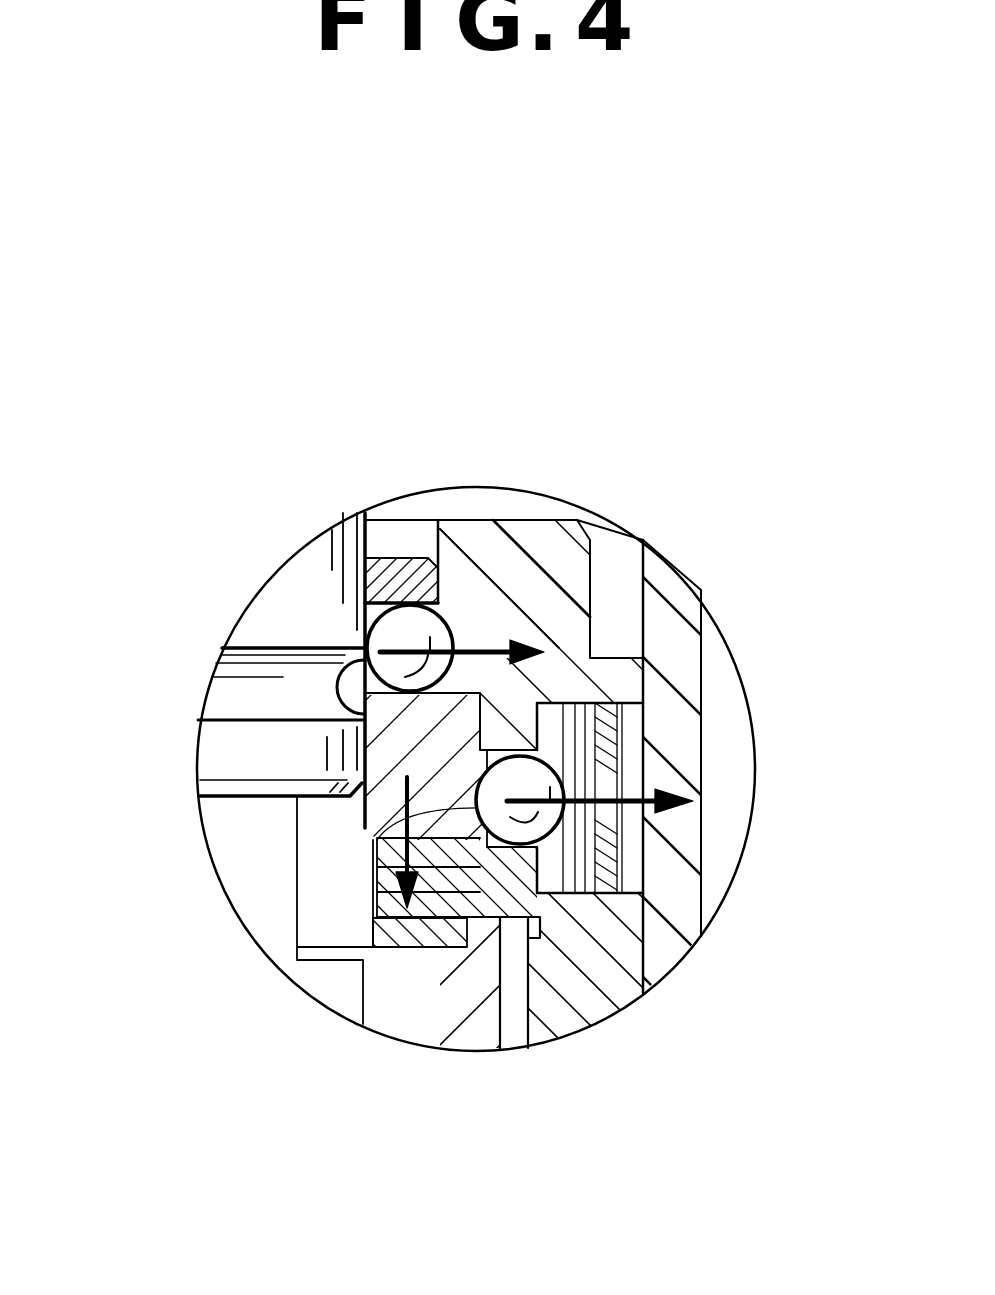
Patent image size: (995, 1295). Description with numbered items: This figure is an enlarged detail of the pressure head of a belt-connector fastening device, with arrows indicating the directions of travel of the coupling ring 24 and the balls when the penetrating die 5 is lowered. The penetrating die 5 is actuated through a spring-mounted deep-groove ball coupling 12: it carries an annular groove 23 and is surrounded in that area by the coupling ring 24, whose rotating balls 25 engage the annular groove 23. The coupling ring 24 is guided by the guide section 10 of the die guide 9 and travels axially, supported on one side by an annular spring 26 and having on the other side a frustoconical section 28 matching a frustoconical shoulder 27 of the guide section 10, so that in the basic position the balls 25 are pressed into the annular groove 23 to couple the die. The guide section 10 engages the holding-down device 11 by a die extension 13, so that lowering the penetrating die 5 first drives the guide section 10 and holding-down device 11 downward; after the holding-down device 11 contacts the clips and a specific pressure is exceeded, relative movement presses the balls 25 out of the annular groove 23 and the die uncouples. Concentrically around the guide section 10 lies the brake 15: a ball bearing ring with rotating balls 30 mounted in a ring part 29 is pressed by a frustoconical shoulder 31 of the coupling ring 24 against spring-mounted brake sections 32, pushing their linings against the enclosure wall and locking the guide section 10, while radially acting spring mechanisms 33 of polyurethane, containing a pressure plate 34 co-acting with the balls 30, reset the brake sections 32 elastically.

The penetrating die 5 is at (303, 585).
The die guide 9 is at (662, 921).
The guide section 10 is at (530, 540).
The holding-down device 11 is at (450, 1000).
The deep-groove ball coupling 12 is at (528, 588).
The die extension 13 is at (273, 900).
The brake 15 is at (668, 745).
The annular groove 23 is at (345, 685).
The coupling ring 24 is at (383, 800).
The rotating balls 25 is at (403, 618).
The annular spring 26 is at (413, 930).
The frustoconical shoulder 27 is at (484, 535).
The frustoconical section 28 is at (327, 756).
The ring part 29 is at (528, 907).
The rotating balls 30 is at (630, 740).
The frustoconical shoulder 31 is at (340, 913).
The brake sections 32 is at (622, 783).
The spring mechanisms 33 is at (648, 720).
The pressure plate 34 is at (560, 690).